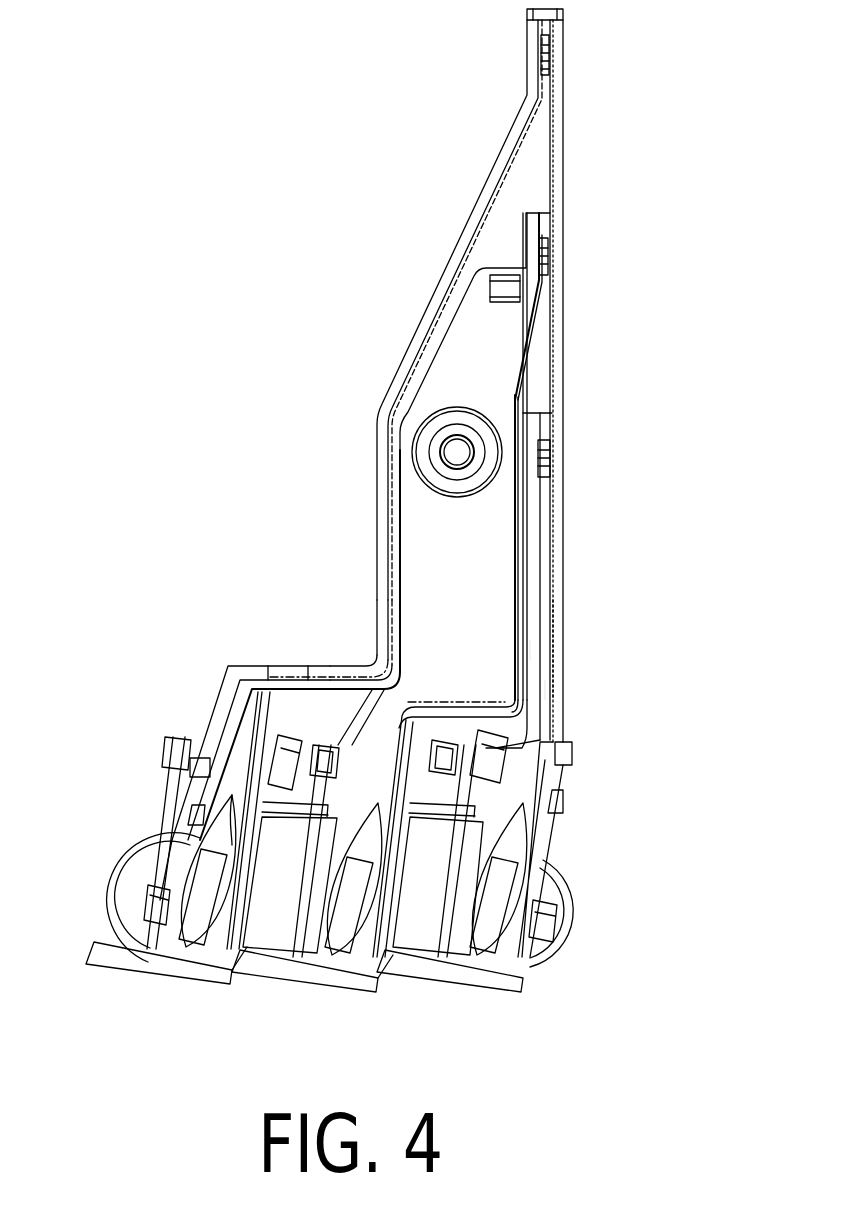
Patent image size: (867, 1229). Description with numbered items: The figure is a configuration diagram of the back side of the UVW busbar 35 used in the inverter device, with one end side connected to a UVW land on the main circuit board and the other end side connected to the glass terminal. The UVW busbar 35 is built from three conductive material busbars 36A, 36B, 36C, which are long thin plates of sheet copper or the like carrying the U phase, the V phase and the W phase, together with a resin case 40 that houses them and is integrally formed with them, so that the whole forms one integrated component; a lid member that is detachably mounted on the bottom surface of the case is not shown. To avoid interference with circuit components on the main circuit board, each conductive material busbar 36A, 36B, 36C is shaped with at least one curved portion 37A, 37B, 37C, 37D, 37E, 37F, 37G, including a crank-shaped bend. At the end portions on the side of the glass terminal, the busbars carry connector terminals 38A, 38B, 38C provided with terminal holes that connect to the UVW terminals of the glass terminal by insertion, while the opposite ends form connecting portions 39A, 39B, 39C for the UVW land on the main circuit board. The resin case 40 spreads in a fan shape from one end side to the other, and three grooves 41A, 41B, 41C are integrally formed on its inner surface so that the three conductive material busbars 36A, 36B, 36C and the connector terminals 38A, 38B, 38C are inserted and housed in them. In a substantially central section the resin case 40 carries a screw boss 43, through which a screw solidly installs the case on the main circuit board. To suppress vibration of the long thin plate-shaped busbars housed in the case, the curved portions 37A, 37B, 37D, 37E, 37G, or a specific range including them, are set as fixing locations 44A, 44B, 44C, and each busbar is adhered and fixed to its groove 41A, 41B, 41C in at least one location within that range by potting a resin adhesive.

The UVW busbar 35 is at (290, 382).
The conductive material busbar 36A is at (388, 496).
The conductive material busbar 36B is at (520, 530).
The conductive material busbar 36C is at (546, 572).
The curved portion 37A is at (256, 692).
The curved portion 37B is at (386, 690).
The curved portion 37C is at (386, 414).
The curved portion 37D is at (401, 720).
The curved portion 37E is at (512, 735).
The curved portion 37F is at (526, 383).
The curved portion 37G is at (541, 727).
The connector terminal 38A is at (178, 925).
The connector terminal 38B is at (366, 930).
The connector terminal 38C is at (516, 932).
The connecting portion 39A is at (540, 53).
The connecting portion 39B is at (549, 256).
The connecting portion 39C is at (551, 447).
The resin case 40 is at (200, 702).
The groove 41A is at (388, 540).
The groove 41B is at (514, 545).
The groove 41C is at (549, 612).
The screw boss 43 is at (457, 437).
The fixing location 44A is at (297, 665).
The fixing location 44B is at (531, 650).
The fixing location 44C is at (546, 690).